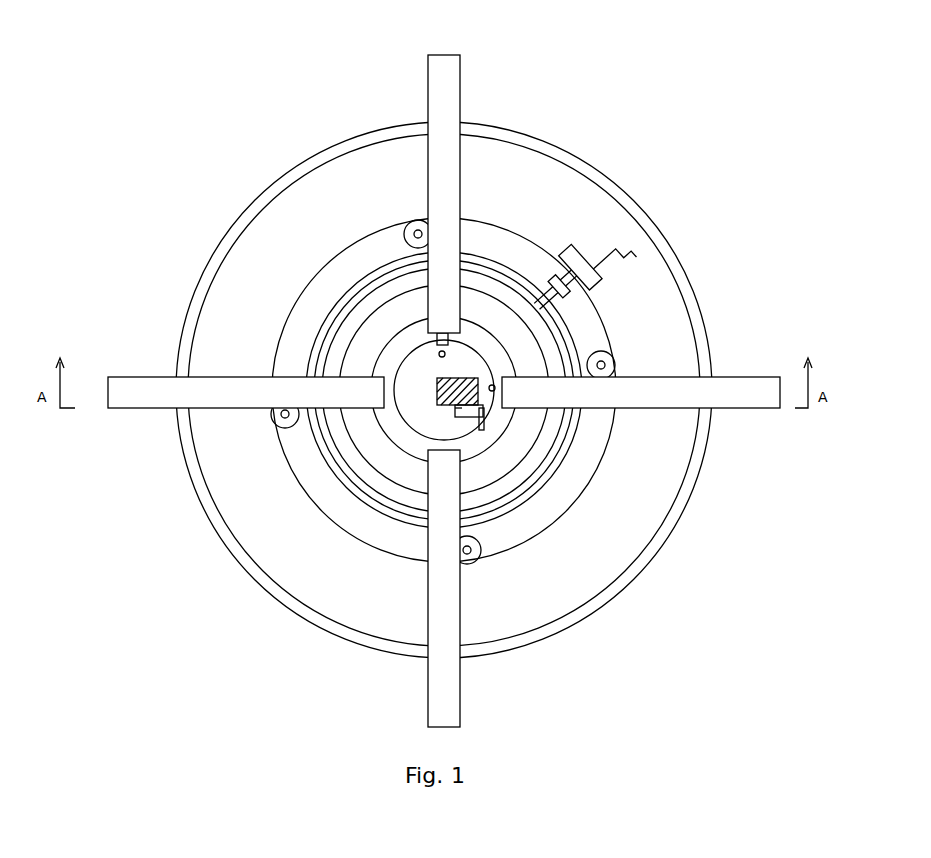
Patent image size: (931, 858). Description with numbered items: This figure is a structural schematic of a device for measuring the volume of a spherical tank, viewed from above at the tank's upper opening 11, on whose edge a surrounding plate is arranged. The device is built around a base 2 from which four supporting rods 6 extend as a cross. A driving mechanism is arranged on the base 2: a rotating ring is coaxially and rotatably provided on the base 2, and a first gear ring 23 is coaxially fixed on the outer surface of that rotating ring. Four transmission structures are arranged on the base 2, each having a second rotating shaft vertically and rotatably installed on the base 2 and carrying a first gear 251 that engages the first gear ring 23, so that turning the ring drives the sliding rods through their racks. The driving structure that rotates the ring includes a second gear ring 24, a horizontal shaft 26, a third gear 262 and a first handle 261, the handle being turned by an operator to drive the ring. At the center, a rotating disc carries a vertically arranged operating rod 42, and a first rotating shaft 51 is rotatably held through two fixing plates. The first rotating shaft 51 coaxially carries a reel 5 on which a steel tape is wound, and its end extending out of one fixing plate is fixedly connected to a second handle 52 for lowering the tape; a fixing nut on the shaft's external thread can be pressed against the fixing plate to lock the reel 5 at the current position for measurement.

The base 2 is at (532, 518).
The reel 5 is at (468, 388).
The supporting rod 6 is at (440, 82).
The upper opening 11 is at (648, 494).
The first gear ring 23 is at (328, 473).
The second gear ring 24 is at (495, 262).
The horizontal shaft 26 is at (641, 262).
The operating rod 42 is at (437, 348).
The first rotating shaft 51 is at (455, 398).
The second handle 52 is at (481, 417).
The first gear 251 is at (417, 233).
The first handle 261 is at (630, 257).
The third gear 262 is at (565, 307).